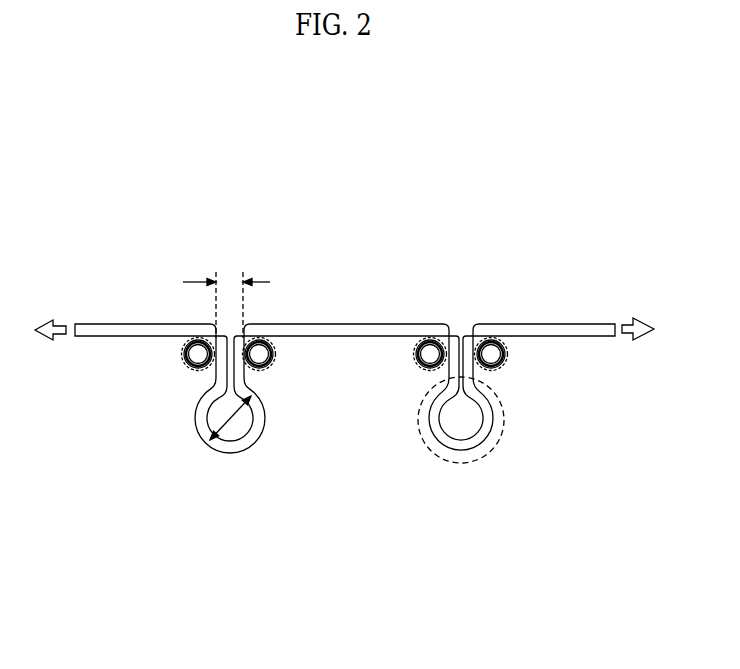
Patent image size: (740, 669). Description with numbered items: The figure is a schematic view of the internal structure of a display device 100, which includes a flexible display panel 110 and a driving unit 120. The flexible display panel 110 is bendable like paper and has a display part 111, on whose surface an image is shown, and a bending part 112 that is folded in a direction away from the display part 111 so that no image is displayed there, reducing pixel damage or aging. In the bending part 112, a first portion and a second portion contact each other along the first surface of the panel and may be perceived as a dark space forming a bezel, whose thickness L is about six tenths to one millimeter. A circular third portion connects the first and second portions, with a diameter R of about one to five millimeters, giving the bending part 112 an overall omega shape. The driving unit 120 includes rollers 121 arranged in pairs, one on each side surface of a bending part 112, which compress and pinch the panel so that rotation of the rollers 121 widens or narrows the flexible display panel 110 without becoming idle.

The display device 100 is at (121, 211).
The flexible display panel 110 is at (134, 314).
The display part 111 is at (380, 330).
The bending part 112 is at (503, 413).
The driving unit 120 is at (170, 372).
The roller 121 is at (273, 368).
The thickness of the bezel L is at (226, 291).
The diameter of the third portion R is at (228, 427).